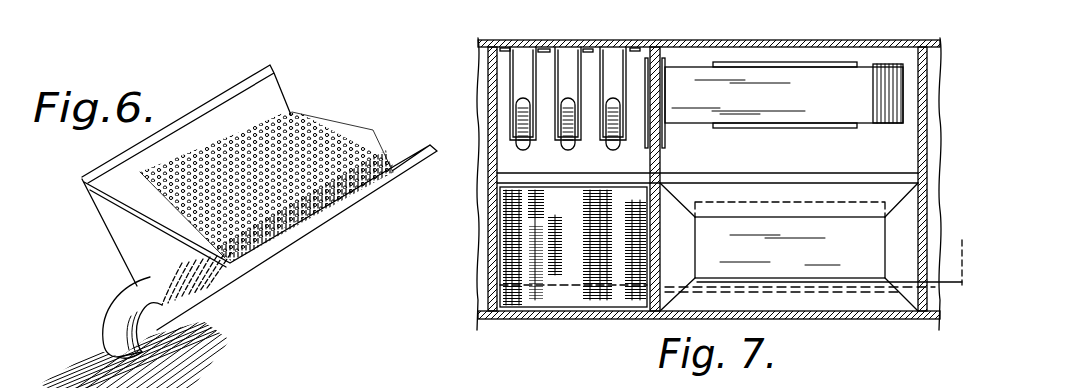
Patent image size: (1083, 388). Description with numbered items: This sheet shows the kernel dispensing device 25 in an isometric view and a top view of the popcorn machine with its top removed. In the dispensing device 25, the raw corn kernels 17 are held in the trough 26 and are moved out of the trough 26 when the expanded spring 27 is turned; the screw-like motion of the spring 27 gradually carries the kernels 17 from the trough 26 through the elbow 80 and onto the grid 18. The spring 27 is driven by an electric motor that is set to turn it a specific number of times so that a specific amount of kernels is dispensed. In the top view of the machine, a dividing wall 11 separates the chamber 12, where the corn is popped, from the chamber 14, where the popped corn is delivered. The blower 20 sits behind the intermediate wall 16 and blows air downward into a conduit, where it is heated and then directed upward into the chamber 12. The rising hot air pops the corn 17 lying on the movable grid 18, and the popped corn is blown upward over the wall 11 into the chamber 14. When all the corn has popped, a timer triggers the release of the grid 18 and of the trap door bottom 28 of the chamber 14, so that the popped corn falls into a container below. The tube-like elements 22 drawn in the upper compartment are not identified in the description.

In FIG. 7, the dividing wall 11 is at (650, 304).
In FIG. 7, the chamber 12 is at (647, 199).
In FIG. 7, the chamber 14 is at (853, 302).
In FIG. 7, the intermediate wall 16 is at (828, 177).
In FIG. 6, the corn kernels 17 is at (323, 124).
In FIG. 6, the movable grid 18 is at (200, 338).
In FIG. 7, the movable grid 18 is at (528, 272).
In FIG. 7, the air blower 20 is at (866, 113).
In FIG. 7, the tubes 22 is at (612, 150).
In FIG. 6, the kernel dispensing device 25 is at (222, 88).
In FIG. 6, the trough 26 is at (84, 181).
In FIG. 6, the expanded spring 27 is at (380, 139).
In FIG. 7, the trap door bottom 28 is at (867, 258).
In FIG. 6, the elbow 80 is at (117, 310).